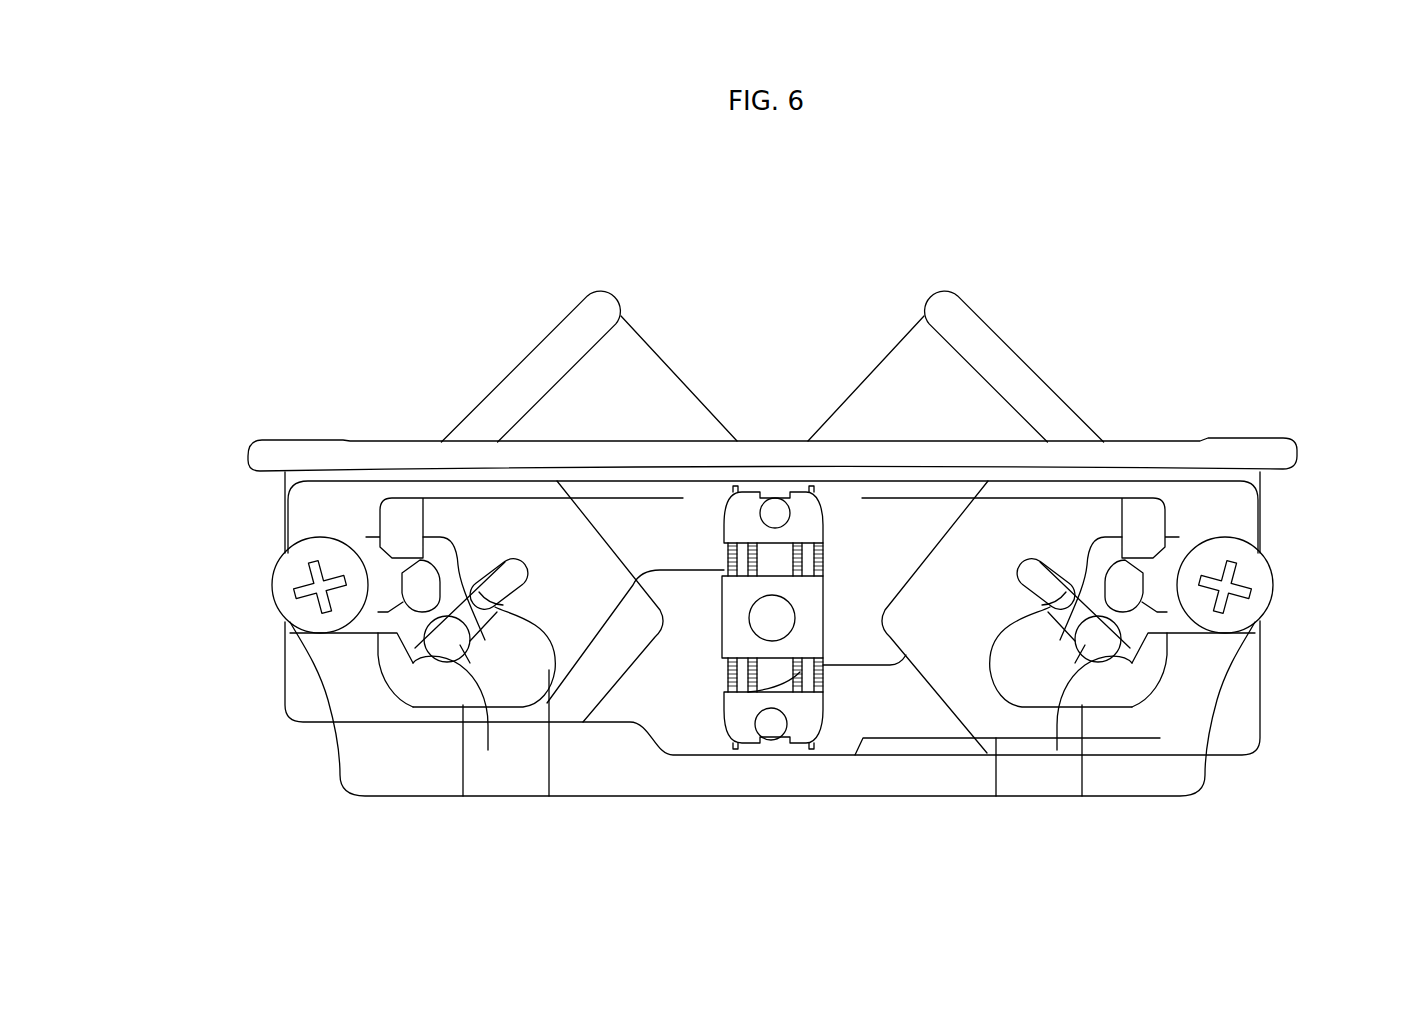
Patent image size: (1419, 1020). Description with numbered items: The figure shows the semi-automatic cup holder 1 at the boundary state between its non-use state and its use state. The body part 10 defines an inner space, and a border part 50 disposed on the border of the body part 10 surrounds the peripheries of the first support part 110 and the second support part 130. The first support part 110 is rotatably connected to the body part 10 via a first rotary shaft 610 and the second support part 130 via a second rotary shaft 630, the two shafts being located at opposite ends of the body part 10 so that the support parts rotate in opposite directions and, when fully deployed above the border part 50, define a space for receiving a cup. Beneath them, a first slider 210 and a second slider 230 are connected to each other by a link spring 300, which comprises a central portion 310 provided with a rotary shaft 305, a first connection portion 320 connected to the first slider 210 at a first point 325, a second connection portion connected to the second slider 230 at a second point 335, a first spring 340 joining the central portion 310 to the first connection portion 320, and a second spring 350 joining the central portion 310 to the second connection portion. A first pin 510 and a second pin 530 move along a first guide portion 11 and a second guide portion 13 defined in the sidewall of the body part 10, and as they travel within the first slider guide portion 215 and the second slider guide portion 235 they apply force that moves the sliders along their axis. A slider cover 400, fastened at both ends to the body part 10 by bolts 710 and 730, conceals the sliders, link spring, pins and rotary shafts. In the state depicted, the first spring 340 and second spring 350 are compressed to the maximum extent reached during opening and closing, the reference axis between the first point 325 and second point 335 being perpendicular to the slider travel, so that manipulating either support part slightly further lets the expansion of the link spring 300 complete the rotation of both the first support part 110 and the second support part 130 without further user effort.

The semi-automatic cup holder 1 is at (1207, 345).
The body part 10 is at (1242, 497).
The first guide portion 11 is at (423, 562).
The second guide portion 13 is at (1130, 567).
The border part 50 is at (301, 452).
The first support part 110 is at (550, 318).
The second support part 130 is at (985, 298).
The first slider 210 is at (587, 672).
The first slider guide portion 215 is at (413, 663).
The second slider 230 is at (983, 713).
The second slider guide portion 235 is at (1162, 545).
The link spring 300 is at (840, 603).
The rotary shaft 305 is at (787, 620).
The central portion 310 is at (737, 637).
The first connection portion 320 is at (742, 517).
The first point 325 is at (775, 513).
The second point 335 is at (772, 725).
The first spring 340 is at (800, 543).
The second spring 350 is at (723, 680).
The slider cover 400 is at (276, 668).
The first pin 510 is at (488, 750).
The second pin 530 is at (1057, 705).
The first rotary shaft 610 is at (507, 578).
The second rotary shaft 630 is at (1035, 578).
The bolt 710 is at (292, 575).
The bolt 730 is at (1243, 570).